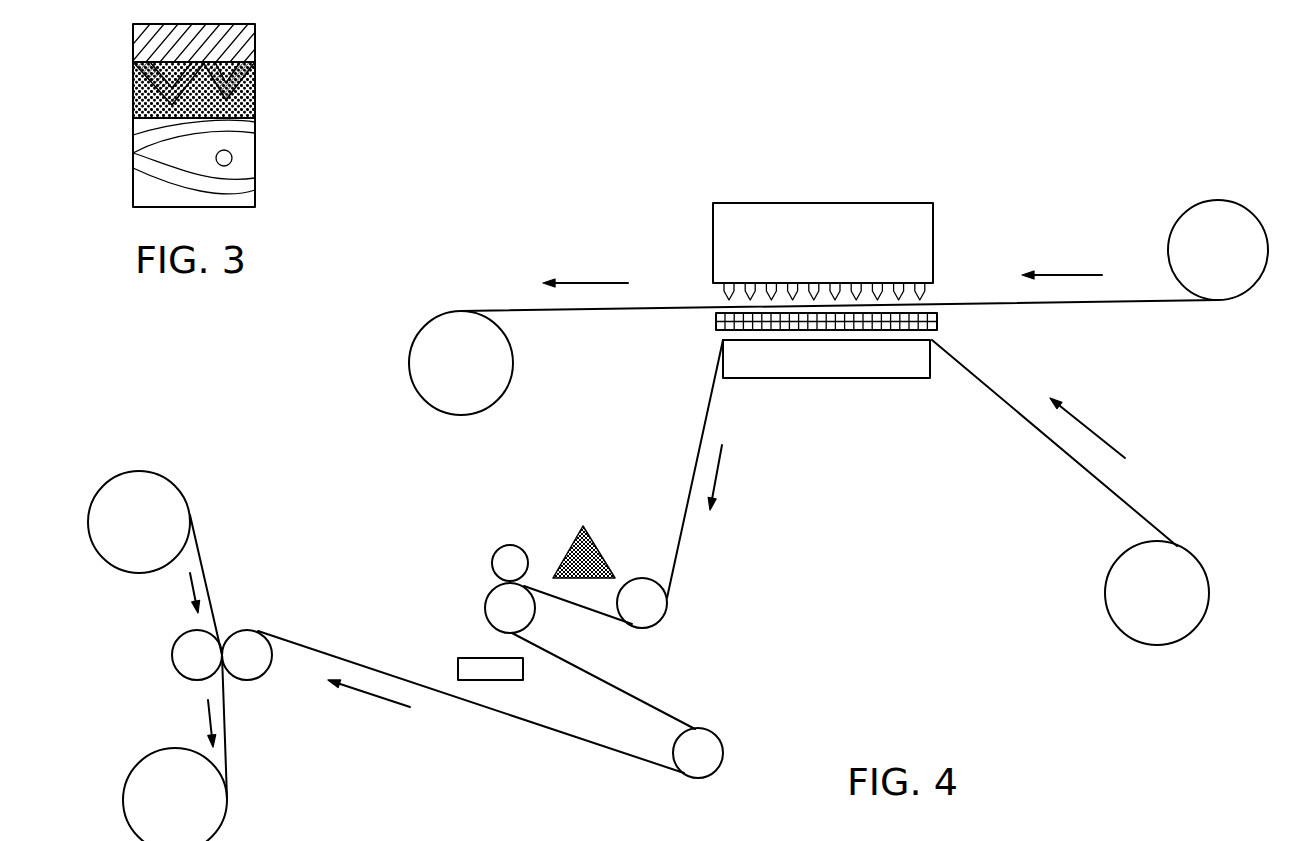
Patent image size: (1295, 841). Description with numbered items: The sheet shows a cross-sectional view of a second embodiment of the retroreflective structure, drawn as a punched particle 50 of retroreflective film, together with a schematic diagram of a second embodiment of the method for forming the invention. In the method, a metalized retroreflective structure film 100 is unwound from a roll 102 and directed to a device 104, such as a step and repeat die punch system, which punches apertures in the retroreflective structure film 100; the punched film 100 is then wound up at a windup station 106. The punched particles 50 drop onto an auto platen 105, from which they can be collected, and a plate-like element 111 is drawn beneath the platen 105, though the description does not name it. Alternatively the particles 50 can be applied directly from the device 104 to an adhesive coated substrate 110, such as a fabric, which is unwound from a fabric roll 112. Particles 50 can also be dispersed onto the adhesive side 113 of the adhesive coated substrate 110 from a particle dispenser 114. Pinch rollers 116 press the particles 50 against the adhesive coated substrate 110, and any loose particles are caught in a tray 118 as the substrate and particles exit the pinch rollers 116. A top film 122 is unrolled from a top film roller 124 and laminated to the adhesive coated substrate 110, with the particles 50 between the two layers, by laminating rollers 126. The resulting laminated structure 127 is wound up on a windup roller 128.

In FIG. 3, the punched particles 50 is at (287, 66).
In FIG. 4, the metalized retroreflective structure film 100 is at (1143, 303).
In FIG. 4, the roll 102 is at (1198, 265).
In FIG. 4, the device 104 is at (800, 258).
In FIG. 4, the auto platen 105 is at (715, 322).
In FIG. 4, the windup station 106 is at (441, 378).
In FIG. 4, the adhesive coated substrate 110 is at (1063, 452).
In FIG. 4, the platen 111 is at (833, 378).
In FIG. 4, the fabric roll 112 is at (1137, 608).
In FIG. 4, the adhesive side 113 is at (1130, 503).
In FIG. 4, the particle dispenser 114 is at (572, 540).
In FIG. 4, the pinch rollers 116 is at (500, 550).
In FIG. 4, the tray 118 is at (472, 658).
In FIG. 4, the top film 122 is at (200, 545).
In FIG. 4, the top film roller 124 is at (119, 537).
In FIG. 4, the laminating rollers 126 is at (170, 653).
In FIG. 4, the laminated structure 127 is at (226, 730).
In FIG. 4, the windup roller 128 is at (155, 815).